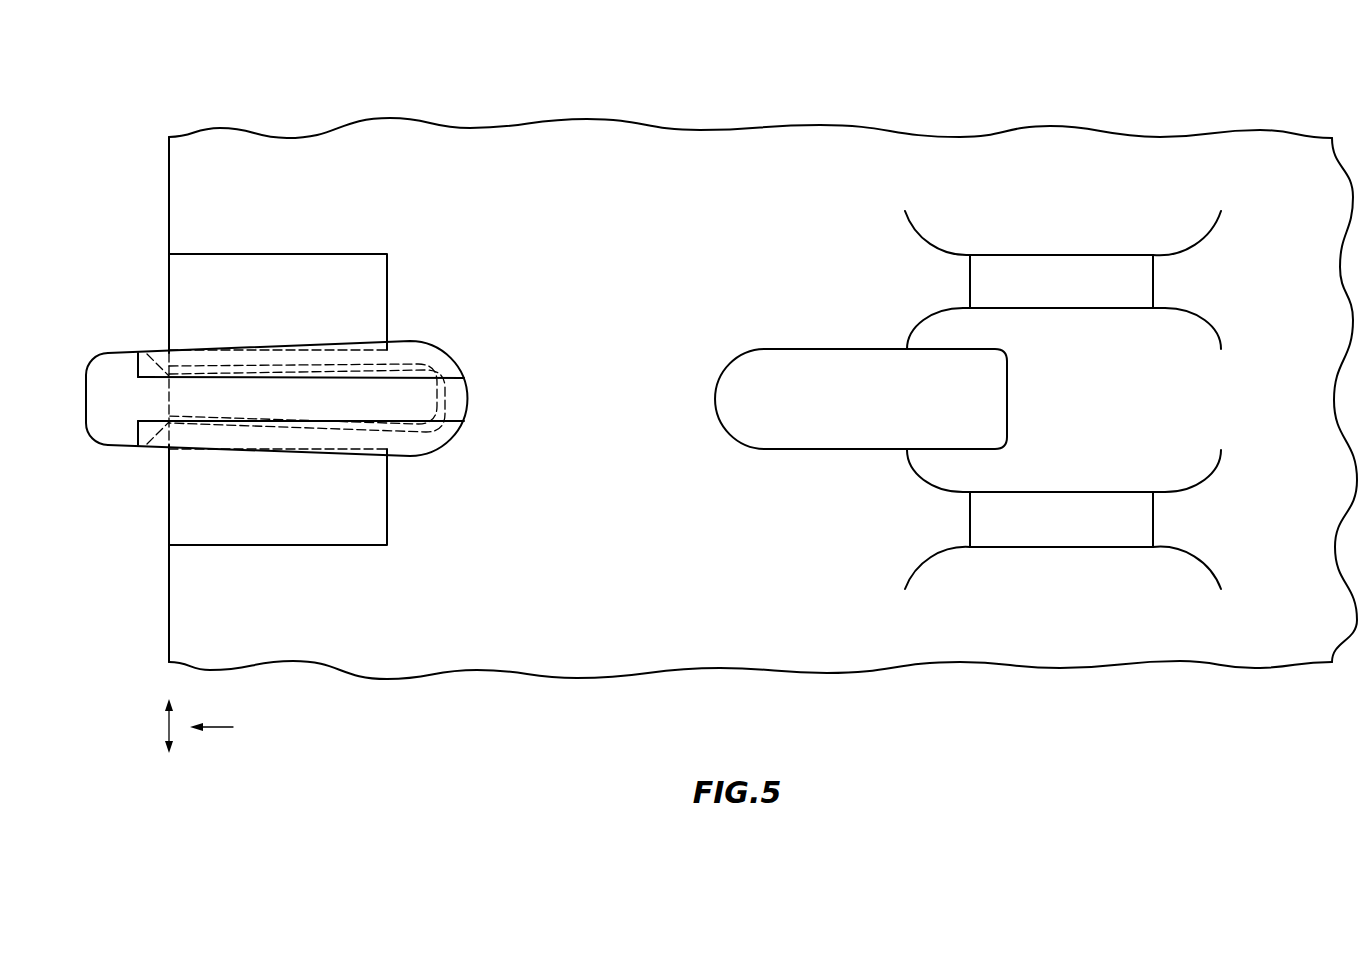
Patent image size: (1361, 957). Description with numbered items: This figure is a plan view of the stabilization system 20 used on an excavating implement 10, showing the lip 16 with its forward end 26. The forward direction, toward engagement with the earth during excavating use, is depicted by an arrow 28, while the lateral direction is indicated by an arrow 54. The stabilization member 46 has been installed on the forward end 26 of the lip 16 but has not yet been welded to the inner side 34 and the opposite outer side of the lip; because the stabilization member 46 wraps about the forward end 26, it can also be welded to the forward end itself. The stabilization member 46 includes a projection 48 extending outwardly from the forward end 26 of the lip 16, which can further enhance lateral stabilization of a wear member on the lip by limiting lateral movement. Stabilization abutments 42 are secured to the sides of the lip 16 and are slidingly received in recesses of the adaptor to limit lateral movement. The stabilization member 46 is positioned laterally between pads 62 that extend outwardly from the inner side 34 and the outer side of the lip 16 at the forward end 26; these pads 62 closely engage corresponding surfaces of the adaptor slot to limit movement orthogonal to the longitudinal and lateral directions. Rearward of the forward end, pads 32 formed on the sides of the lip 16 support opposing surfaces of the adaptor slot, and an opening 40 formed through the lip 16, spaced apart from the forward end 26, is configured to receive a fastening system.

The implement 10 is at (195, 84).
The lip 16 is at (500, 676).
The stabilization system 20 is at (448, 333).
The forward end 26 is at (169, 573).
The arrow 28 is at (215, 727).
The pads 32 is at (1053, 278).
The inner side 34 is at (515, 152).
The opening 40 is at (845, 449).
The stabilization abutments 42 is at (430, 376).
The stabilization member 46 is at (136, 452).
The projection 48 is at (86, 398).
The arrow 54 is at (169, 722).
The pads 62 is at (300, 273).